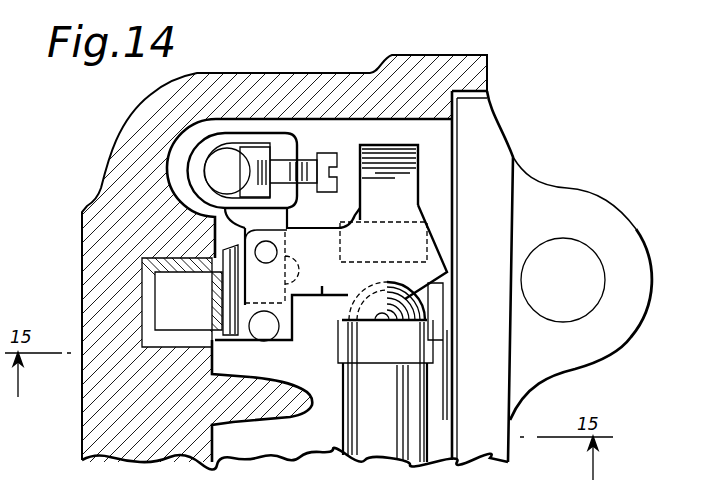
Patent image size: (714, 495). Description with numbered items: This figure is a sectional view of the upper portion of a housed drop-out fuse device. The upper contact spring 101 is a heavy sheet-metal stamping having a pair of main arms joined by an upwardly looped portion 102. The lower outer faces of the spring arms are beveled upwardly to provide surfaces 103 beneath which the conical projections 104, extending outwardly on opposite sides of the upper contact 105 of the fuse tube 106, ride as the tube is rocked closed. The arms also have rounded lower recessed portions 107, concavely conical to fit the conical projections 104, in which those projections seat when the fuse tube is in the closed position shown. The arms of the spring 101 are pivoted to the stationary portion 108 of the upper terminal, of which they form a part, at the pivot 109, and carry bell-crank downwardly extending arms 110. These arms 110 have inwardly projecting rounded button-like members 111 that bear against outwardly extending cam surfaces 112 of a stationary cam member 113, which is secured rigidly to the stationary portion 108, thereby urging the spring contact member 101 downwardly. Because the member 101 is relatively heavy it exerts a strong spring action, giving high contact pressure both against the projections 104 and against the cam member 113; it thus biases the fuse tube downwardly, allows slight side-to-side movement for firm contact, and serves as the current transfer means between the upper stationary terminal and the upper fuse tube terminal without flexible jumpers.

The upper contact spring 101 is at (322, 298).
The upwardly looped portion 102 is at (418, 150).
The beveled surfaces 103 is at (447, 288).
The conical projections 104 is at (423, 308).
The upper contact 105 is at (410, 352).
The fuse tube 106 is at (425, 425).
The rounded lower recessed portions 107 is at (390, 288).
The stationary portion of the upper terminal 108 is at (277, 219).
The pivot 109 is at (262, 257).
The bell crank downwardly extending arms 110 is at (243, 308).
The button like members 111 is at (286, 342).
The cam surfaces 112 is at (232, 358).
The stationary cam member 113 is at (252, 345).